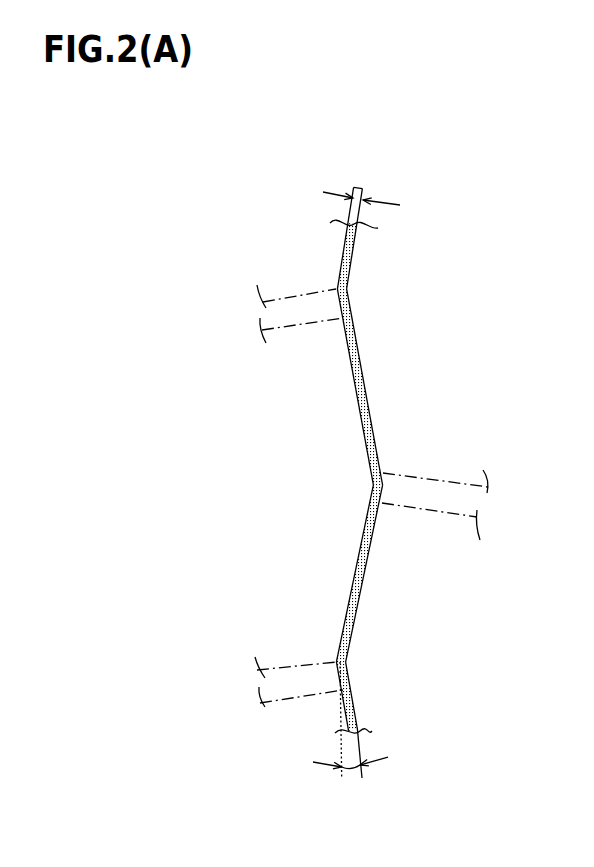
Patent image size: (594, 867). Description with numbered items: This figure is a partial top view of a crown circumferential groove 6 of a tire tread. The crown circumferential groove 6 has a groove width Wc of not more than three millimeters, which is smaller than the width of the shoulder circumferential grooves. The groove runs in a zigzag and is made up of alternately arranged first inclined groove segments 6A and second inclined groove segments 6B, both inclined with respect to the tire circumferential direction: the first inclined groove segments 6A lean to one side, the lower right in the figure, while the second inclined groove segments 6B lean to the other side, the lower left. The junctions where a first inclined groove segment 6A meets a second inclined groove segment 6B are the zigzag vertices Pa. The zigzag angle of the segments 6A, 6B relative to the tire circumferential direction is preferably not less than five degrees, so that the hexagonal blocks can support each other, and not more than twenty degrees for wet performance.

The crown circumferential groove 6 is at (371, 468).
The first inclined groove segments 6A is at (366, 390).
The second inclined groove segments 6B is at (355, 258).
The zigzag vertices Pa is at (333, 287).
The groove width Wc is at (363, 187).